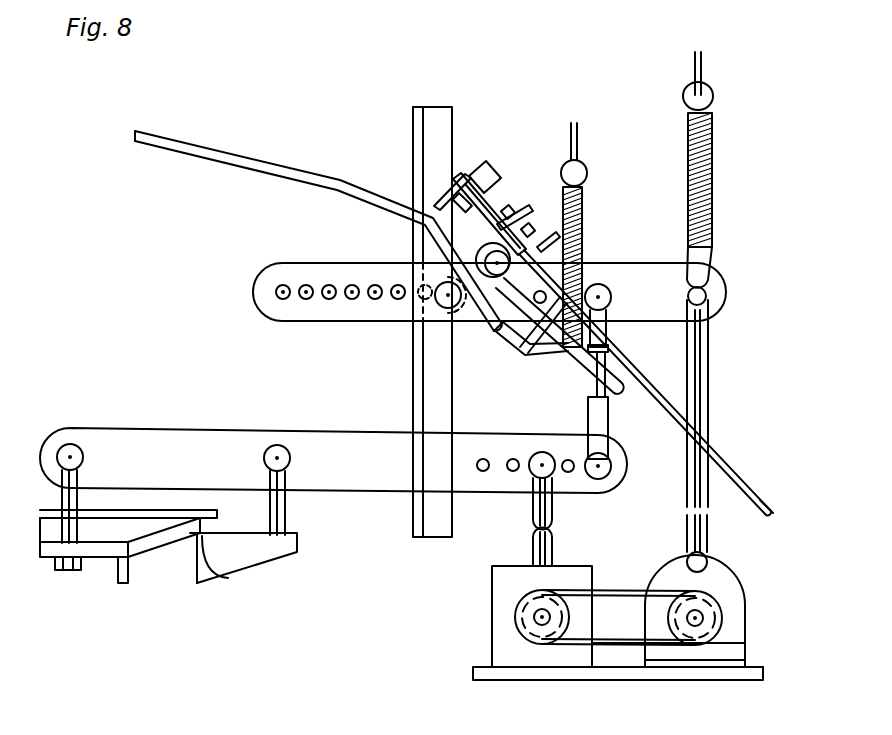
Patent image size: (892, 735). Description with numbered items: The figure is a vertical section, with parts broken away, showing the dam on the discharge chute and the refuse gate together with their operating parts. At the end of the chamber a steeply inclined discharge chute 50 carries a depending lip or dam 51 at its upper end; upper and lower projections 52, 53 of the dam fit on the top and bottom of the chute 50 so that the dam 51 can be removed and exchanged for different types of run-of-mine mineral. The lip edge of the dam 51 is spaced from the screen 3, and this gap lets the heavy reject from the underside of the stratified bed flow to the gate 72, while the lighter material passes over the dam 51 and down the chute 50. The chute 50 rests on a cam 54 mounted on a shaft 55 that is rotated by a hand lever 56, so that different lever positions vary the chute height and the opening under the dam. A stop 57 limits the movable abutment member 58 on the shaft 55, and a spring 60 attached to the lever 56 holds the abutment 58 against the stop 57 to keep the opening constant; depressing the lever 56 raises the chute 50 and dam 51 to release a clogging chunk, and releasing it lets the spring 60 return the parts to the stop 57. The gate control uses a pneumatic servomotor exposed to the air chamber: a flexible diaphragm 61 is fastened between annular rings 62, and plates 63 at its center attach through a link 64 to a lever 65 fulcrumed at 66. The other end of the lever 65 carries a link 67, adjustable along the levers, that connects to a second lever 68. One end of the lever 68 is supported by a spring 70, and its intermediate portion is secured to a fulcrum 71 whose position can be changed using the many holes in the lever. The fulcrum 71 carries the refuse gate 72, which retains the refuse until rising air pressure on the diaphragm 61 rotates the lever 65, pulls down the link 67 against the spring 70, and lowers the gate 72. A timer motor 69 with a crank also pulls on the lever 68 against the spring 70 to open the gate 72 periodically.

The screen 3 is at (184, 137).
The discharge chute 50 is at (798, 485).
The dam 51 is at (453, 186).
The upper projection 52 is at (488, 180).
The lower projection 53 is at (445, 204).
The cam 54 is at (497, 334).
The shaft 55 is at (490, 262).
The hand lever 56 is at (642, 381).
The stop 57 is at (527, 228).
The abutment member 58 is at (553, 240).
The spring 60 is at (583, 243).
The flexible diaphragm 61 is at (145, 548).
The annular rings 62 is at (229, 576).
The plates 63 is at (65, 571).
The link 64 is at (70, 497).
The lever 65 is at (90, 435).
The fulcrum 66 is at (268, 461).
The link 67 is at (608, 420).
The second lever 68 is at (292, 270).
The timer motor 69 is at (661, 573).
The spring 70 is at (703, 163).
The fulcrum 71 is at (440, 307).
The refuse gate 72 is at (522, 358).